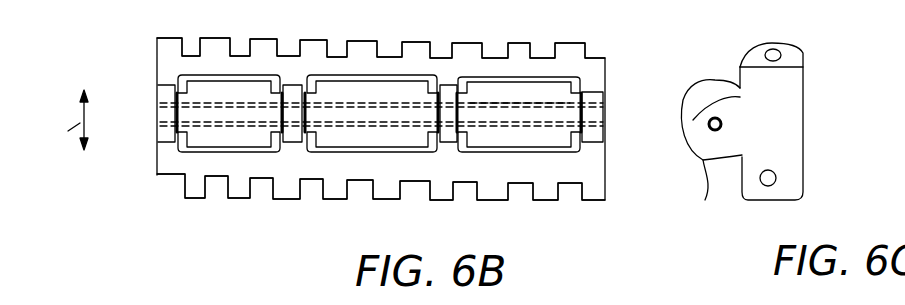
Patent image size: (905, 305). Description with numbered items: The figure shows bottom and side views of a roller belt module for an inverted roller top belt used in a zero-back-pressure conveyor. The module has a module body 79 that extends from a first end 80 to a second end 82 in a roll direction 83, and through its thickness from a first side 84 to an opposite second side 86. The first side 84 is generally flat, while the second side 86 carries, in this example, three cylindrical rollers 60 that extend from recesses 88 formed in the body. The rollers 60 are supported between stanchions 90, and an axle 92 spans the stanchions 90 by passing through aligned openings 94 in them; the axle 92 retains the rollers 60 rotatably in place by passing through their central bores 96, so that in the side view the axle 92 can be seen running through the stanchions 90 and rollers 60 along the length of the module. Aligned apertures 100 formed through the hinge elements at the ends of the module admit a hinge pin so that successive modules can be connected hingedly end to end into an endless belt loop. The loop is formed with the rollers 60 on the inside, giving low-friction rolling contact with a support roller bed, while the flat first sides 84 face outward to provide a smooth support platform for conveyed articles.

In FIG. 6B, the cylindrical roller 60 is at (605, 157).
In FIG. 6C, the cylindrical roller 60 is at (694, 196).
In FIG. 6C, the module body 79 is at (782, 134).
In FIG. 6B, the first end 80 is at (189, 199).
In FIG. 6B, the second end 82 is at (167, 37).
In FIG. 6B, the roll direction 83 is at (55, 120).
In FIG. 6C, the first side 84 is at (803, 103).
In FIG. 6C, the second side 86 is at (739, 80).
In FIG. 6B, the recess 88 is at (307, 150).
In FIG. 6C, the stanchion 90 is at (707, 124).
In FIG. 6B, the axle 92 is at (156, 115).
In FIG. 6B, the aligned opening 94 is at (292, 103).
In FIG. 6B, the central bore 96 is at (533, 100).
In FIG. 6C, the aligned aperture 100 is at (776, 52).